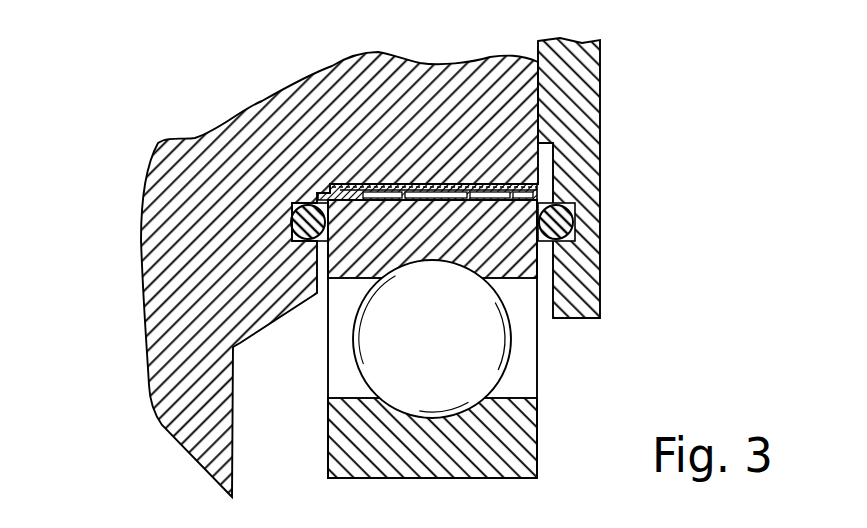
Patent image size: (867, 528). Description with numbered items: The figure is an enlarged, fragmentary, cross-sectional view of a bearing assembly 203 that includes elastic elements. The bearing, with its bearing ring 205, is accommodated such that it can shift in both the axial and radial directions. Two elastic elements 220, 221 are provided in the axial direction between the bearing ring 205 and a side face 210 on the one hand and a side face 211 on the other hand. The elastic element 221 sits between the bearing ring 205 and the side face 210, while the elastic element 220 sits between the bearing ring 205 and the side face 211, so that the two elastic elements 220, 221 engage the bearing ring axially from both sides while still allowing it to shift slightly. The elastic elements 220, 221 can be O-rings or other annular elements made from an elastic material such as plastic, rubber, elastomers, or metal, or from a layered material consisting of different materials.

The bearing 203 is at (565, 362).
The bearing ring 205 is at (350, 193).
The side face 210 is at (298, 263).
The side face 211 is at (580, 271).
The elastic element 220 is at (568, 213).
The elastic element 221 is at (293, 222).